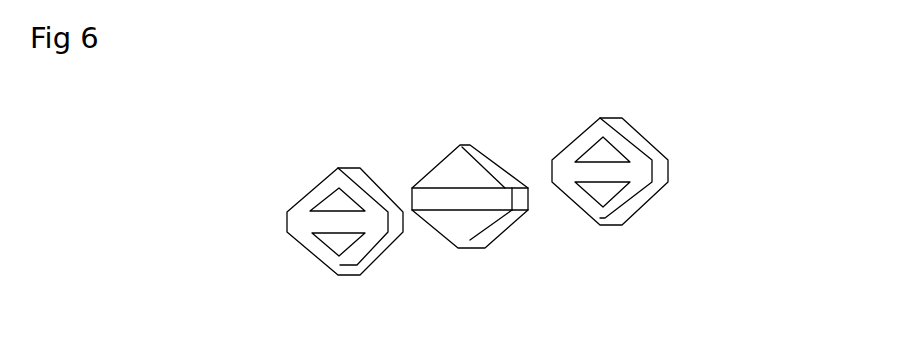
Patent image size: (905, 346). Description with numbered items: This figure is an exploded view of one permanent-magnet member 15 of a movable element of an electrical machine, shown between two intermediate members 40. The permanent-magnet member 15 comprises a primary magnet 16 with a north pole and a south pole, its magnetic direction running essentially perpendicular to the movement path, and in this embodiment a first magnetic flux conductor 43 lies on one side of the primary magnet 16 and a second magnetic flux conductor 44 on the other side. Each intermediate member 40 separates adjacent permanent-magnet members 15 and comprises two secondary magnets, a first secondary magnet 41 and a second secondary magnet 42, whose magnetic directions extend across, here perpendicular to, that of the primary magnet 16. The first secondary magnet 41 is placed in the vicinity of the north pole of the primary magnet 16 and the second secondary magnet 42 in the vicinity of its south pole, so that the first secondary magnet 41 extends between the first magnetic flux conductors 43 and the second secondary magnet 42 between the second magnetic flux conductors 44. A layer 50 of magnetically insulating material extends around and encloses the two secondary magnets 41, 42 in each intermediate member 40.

The permanent-magnet member 15 is at (458, 150).
The primary magnet 16 is at (493, 190).
The intermediate member 40 is at (299, 186).
The first secondary magnet 41 is at (347, 245).
The second secondary magnet 42 is at (339, 188).
The first magnetic flux conductor 43 is at (462, 217).
The second magnetic flux conductor 44 is at (468, 160).
The layer of magnetically insulating material 50 is at (313, 248).